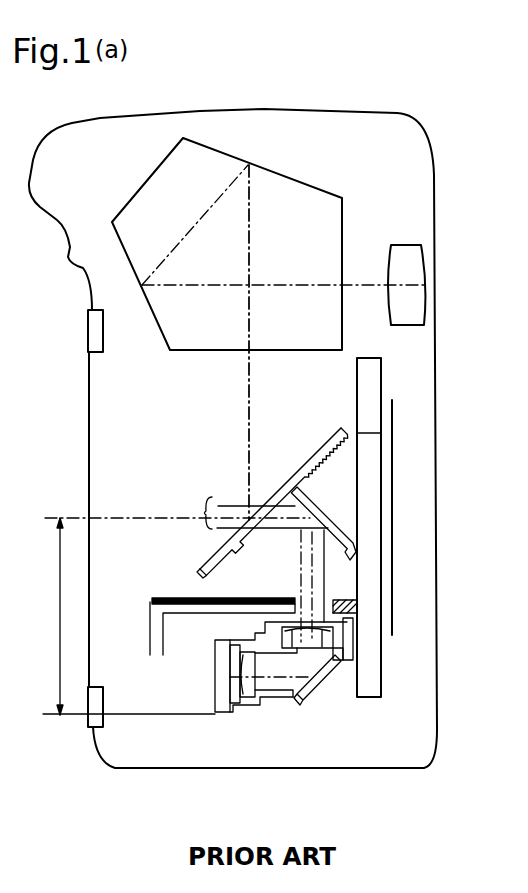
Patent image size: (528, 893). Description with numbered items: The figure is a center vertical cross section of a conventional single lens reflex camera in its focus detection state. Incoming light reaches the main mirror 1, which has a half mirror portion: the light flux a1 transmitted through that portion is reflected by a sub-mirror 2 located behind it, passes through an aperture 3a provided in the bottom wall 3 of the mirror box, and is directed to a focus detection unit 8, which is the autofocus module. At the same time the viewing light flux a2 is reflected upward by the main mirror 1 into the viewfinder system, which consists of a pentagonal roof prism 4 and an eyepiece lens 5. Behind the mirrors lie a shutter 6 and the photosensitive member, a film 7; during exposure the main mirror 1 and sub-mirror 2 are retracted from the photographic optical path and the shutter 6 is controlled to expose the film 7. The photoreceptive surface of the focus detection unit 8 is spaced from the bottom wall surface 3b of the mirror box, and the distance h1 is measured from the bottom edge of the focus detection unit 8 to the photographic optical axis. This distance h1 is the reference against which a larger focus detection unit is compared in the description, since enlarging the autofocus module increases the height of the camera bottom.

The main mirror 1 is at (314, 460).
The sub-mirror 2 is at (327, 520).
The bottom wall of mirror box 3 is at (184, 613).
The aperture 3a is at (297, 590).
The bottom wall surface 3b is at (173, 600).
The pentagonal roof prism 4 is at (281, 172).
The eyepiece lens 5 is at (412, 258).
The shutter 6 is at (374, 378).
The film 7 is at (396, 420).
The focus detection unit 8 is at (317, 705).
The light flux a1 is at (205, 513).
The viewing light flux a2 is at (249, 418).
The distance h1 is at (123, 616).